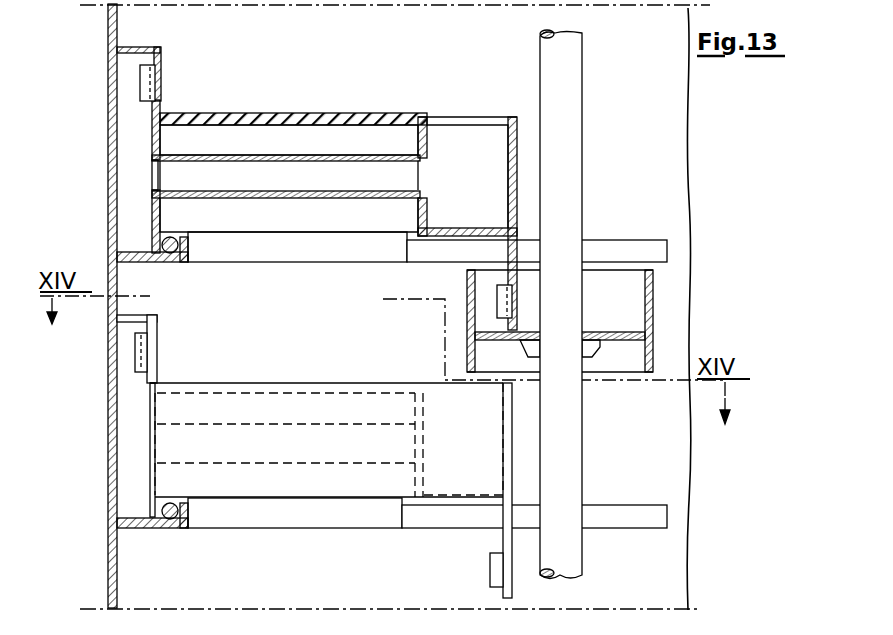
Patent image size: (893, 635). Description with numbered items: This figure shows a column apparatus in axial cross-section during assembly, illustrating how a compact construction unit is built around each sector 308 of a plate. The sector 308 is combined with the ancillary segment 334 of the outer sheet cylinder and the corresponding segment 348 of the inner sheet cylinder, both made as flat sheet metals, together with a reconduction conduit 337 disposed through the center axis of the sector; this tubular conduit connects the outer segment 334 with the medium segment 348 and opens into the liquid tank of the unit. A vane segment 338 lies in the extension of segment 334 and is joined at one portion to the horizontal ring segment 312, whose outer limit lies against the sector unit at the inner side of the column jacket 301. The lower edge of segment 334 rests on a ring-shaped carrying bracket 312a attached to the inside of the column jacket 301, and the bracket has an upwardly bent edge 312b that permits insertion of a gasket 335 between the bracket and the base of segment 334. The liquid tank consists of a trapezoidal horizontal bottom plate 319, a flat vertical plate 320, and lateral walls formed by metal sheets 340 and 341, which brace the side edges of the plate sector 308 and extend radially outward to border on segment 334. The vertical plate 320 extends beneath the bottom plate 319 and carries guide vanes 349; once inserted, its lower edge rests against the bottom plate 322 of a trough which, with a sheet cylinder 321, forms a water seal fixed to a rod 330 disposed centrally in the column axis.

The column jacket 301 is at (112, 115).
The sector of a plate 308 is at (316, 113).
The horizontal ring segment 312 is at (132, 48).
The carrying bracket 312a is at (133, 260).
The bent edge 312b is at (188, 246).
The bottom plate 319 is at (456, 228).
The vertical plate 320 is at (510, 138).
The sheet cylinder 321 is at (653, 298).
The bottom plate of trough 322 is at (620, 332).
The rod 330 is at (575, 90).
The segment of the outer sheet cylinder 334 is at (160, 136).
The gasket 335 is at (173, 254).
The reconduction conduit 337 is at (247, 195).
The vane segment 338 is at (140, 80).
The metal sheet 340 is at (476, 128).
The metal sheet 341 is at (330, 488).
The segment of the inner sheet cylinder 348 is at (427, 141).
The guide vanes 349 is at (500, 300).